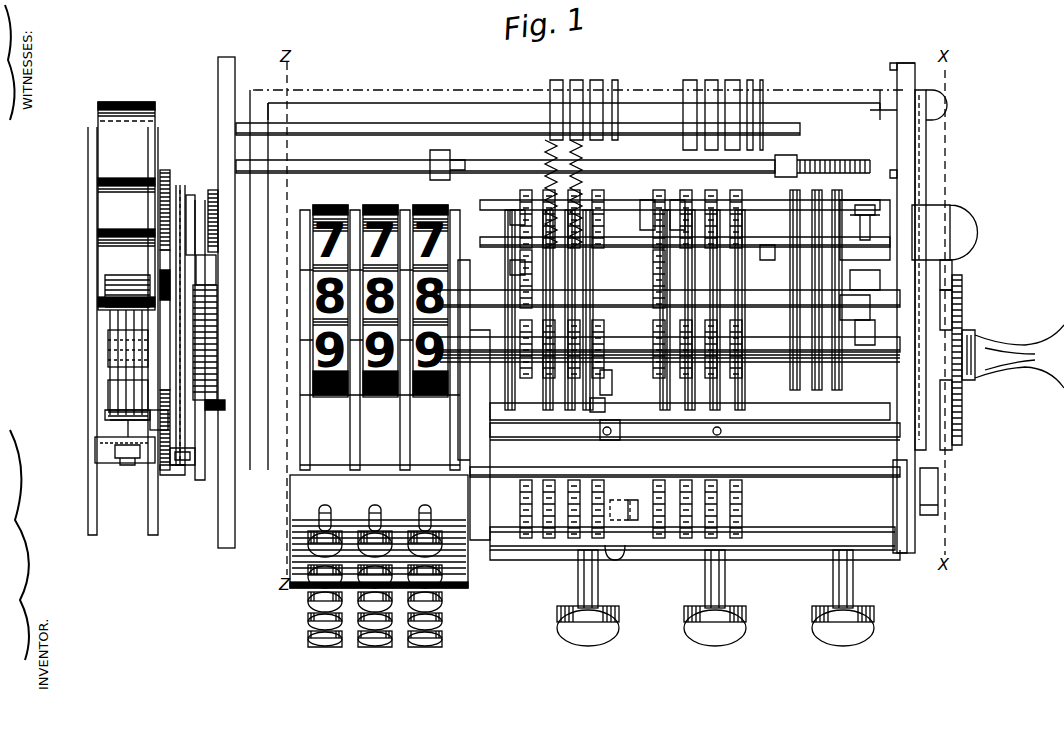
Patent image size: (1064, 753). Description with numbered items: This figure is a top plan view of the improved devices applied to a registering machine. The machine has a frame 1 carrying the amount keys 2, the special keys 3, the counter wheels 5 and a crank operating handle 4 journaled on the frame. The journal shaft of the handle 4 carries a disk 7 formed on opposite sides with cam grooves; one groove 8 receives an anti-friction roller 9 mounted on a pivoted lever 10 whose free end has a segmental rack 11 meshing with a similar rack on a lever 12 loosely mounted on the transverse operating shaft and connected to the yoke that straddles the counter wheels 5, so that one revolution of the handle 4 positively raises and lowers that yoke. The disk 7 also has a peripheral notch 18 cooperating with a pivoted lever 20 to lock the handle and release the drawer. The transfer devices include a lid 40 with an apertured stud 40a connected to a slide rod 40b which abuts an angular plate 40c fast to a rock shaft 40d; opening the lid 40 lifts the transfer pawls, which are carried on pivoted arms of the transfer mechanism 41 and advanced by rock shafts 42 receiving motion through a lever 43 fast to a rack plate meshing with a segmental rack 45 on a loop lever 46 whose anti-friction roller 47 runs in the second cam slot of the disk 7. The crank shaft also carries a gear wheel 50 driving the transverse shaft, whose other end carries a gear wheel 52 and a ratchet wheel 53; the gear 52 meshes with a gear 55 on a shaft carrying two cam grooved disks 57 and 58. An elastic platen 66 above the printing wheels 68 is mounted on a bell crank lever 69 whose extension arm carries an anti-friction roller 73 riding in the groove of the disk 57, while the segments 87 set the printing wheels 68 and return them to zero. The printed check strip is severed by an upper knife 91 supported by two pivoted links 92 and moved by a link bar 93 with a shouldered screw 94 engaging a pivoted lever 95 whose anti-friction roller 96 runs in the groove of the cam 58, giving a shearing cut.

The frame 1 is at (228, 447).
The amount keys 2 is at (306, 600).
The special keys 3 is at (620, 622).
The operating handle 4 is at (1030, 343).
The counter wheels 5 is at (518, 561).
The disk 7 is at (930, 462).
The cam groove 8 is at (952, 285).
The anti-friction roller 9 is at (962, 322).
The pivoted lever 10 is at (952, 270).
The segmental rack 11 is at (850, 290).
The lever 12 is at (862, 205).
The peripheral notch 18 is at (905, 435).
The pivoted lever 20 is at (938, 500).
The lid 40 is at (670, 384).
The apertured stud 40a is at (632, 535).
The slide rod 40b is at (617, 500).
The angular plate 40c is at (622, 412).
The rock shaft 40d is at (763, 425).
The spring 41 is at (623, 240).
The rock shafts 42 is at (800, 270).
The lever 43 is at (645, 95).
The segmental rack 45 is at (795, 137).
The loop lever 46 is at (890, 82).
The anti-friction roller 47 is at (955, 252).
The gear wheel 50 is at (962, 300).
The gear wheel 52 is at (225, 403).
The ratchet wheel 53 is at (203, 420).
The gear 55 is at (218, 250).
The cam grooved disk 57 is at (195, 200).
The cam grooved disk 58 is at (218, 200).
The elastic platen 66 is at (101, 383).
The printing wheels 68 is at (99, 343).
The bell crank lever 69 is at (101, 355).
The anti-friction roller 73 is at (178, 195).
The segments 87 is at (122, 102).
The upper knife 91 is at (95, 449).
The pivoted links 92 is at (127, 465).
The link bar 93 is at (145, 445).
The shouldered screw 94 is at (176, 475).
The pivoted lever 95 is at (180, 462).
The anti-friction roller 96 is at (216, 232).